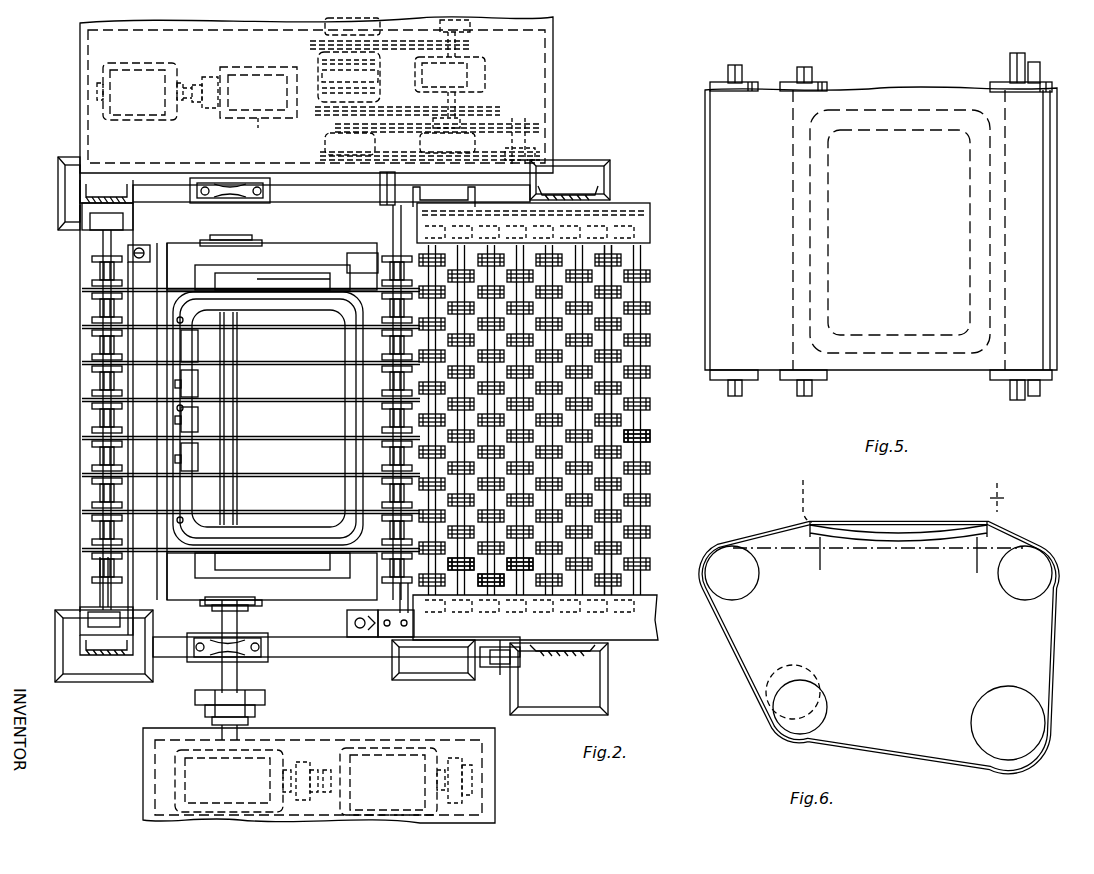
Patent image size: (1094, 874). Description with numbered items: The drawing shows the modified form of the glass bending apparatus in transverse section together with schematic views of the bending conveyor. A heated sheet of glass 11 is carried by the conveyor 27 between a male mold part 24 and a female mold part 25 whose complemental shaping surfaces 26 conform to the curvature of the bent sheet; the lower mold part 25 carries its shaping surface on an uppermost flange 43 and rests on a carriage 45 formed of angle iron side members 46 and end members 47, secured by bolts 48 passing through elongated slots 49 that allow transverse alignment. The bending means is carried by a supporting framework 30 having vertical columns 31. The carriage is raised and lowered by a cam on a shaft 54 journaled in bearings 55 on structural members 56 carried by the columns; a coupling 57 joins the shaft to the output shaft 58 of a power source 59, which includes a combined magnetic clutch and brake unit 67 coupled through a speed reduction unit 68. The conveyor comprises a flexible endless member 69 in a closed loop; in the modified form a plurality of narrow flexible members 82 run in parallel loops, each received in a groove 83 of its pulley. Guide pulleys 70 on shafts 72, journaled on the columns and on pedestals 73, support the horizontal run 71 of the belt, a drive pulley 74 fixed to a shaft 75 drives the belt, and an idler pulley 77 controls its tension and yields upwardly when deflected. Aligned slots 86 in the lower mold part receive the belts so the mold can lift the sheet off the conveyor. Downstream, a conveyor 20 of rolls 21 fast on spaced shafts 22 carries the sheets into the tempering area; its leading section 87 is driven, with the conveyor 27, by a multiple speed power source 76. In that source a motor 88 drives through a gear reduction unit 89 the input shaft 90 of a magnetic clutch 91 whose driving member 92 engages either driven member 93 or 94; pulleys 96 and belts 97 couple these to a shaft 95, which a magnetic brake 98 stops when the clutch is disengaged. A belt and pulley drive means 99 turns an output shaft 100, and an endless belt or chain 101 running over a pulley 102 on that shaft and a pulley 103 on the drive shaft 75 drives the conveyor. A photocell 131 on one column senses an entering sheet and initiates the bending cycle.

In FIG. 6, the sheet of glass 11 is at (896, 531).
In FIG. 2, the conveyor 20 is at (646, 418).
In FIG. 2, the rolls 21 is at (636, 466).
In FIG. 2, the shafts 22 is at (610, 505).
In FIG. 6, the male mold part 24 is at (1004, 500).
In FIG. 2, the female mold part 25 is at (190, 383).
In FIG. 5, the female mold part 25 is at (866, 343).
In FIG. 6, the female mold part 25 is at (975, 566).
In FIG. 2, the shaping surfaces 26 is at (190, 460).
In FIG. 2, the conveyor 27 is at (88, 347).
In FIG. 2, the supporting framework 30 is at (92, 655).
In FIG. 2, the columns 31 is at (80, 190).
In FIG. 2, the flange 43 is at (258, 528).
In FIG. 2, the carriage 45 is at (322, 250).
In FIG. 2, the side members 46 is at (174, 388).
In FIG. 2, the end members 47 is at (292, 256).
In FIG. 2, the bolts 48 is at (174, 419).
In FIG. 2, the elongated slots 49 is at (174, 460).
In FIG. 2, the shaft 54 is at (240, 621).
In FIG. 2, the bearings 55 is at (246, 198).
In FIG. 2, the structural members 56 is at (171, 194).
In FIG. 2, the coupling 57 is at (196, 702).
In FIG. 2, the output shaft 58 is at (250, 722).
In FIG. 2, the power source 59 is at (322, 726).
In FIG. 2, the combined magnetic clutch and brake unit 67 is at (395, 745).
In FIG. 2, the speed reduction unit 68 is at (176, 780).
In FIG. 5, the flexible endless member 69 is at (866, 101).
In FIG. 6, the flexible endless member 69 is at (772, 533).
In FIG. 2, the guide pulleys 70 is at (384, 282).
In FIG. 5, the guide pulleys 70 is at (722, 82).
In FIG. 6, the guide pulleys 70 is at (752, 587).
In FIG. 6, the horizontal run 71 is at (785, 555).
In FIG. 2, the shafts 72 is at (98, 583).
In FIG. 5, the shafts 72 is at (740, 393).
In FIG. 2, the pedestals 73 is at (432, 652).
In FIG. 5, the drive pulley 74 is at (1000, 82).
In FIG. 6, the drive pulley 74 is at (973, 714).
In FIG. 2, the shaft 75 is at (379, 191).
In FIG. 5, the shaft 75 is at (1008, 392).
In FIG. 2, the power source 76 is at (74, 102).
In FIG. 5, the idler pulley 77 is at (812, 81).
In FIG. 6, the idler pulley 77 is at (828, 713).
In FIG. 2, the flexible members 82 is at (278, 440).
In FIG. 2, the groove 83 is at (88, 286).
In FIG. 2, the slots 86 is at (200, 332).
In FIG. 2, the section 87 is at (474, 242).
In FIG. 2, the motor 88 is at (154, 62).
In FIG. 2, the gear reduction unit 89 is at (240, 66).
In FIG. 2, the input shaft 90 is at (325, 146).
In FIG. 2, the magnetic clutch 91 is at (314, 58).
In FIG. 2, the driving member 92 is at (379, 75).
In FIG. 2, the driven member 93 is at (378, 59).
In FIG. 2, the driven member 94 is at (379, 92).
In FIG. 2, the shaft 95 is at (466, 50).
In FIG. 2, the pulleys 96 is at (323, 33).
In FIG. 2, the belts 97 is at (418, 122).
In FIG. 2, the magnetic brake 98 is at (486, 70).
In FIG. 2, the belt and pulley drive means 99 is at (490, 120).
In FIG. 2, the output shaft 100 is at (545, 132).
In FIG. 2, the endless belt or chain 101 is at (525, 138).
In FIG. 2, the pulley 102 is at (548, 148).
In FIG. 2, the pulley 103 is at (368, 157).
In FIG. 2, the photocell 131 is at (152, 262).